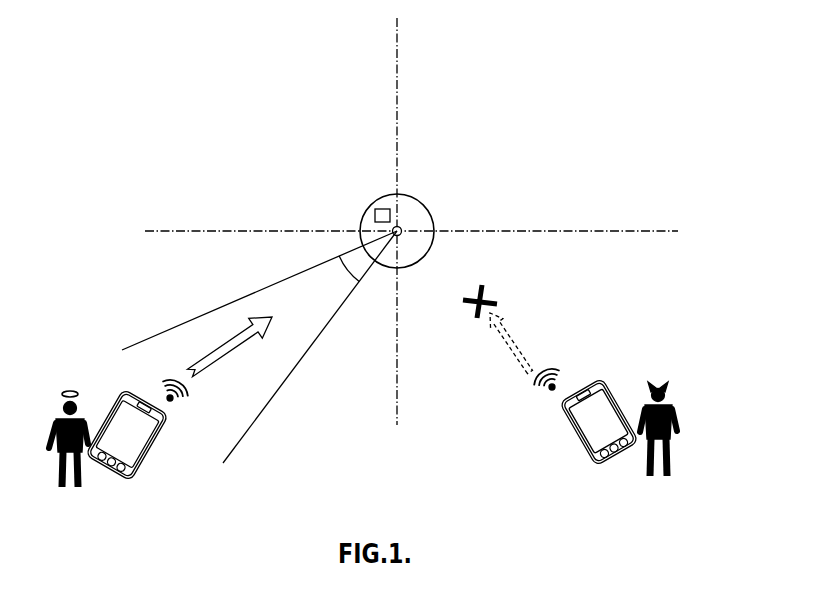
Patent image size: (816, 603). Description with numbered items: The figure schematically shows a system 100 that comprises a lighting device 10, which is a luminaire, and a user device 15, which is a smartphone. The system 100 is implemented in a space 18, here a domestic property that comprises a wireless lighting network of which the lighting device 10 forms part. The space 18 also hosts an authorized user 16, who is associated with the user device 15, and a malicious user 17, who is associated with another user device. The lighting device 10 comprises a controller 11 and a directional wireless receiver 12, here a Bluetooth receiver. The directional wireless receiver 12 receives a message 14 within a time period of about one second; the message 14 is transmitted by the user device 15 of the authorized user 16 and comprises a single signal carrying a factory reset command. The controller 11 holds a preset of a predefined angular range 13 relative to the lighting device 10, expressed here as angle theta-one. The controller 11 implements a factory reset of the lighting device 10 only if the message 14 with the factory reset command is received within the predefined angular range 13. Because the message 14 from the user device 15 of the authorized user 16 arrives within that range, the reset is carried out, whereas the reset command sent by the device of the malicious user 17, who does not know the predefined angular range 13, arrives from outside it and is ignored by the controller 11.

The system 100 is at (218, 105).
The lighting device 10 is at (379, 195).
The controller 11 is at (389, 210).
The directional wireless receiver 12 is at (403, 228).
The predefined angular range 13 is at (341, 273).
The message 14 is at (251, 338).
The user device 15 is at (163, 444).
The authorized user 16 is at (80, 411).
The malicious user 17 is at (670, 406).
The space 18 is at (495, 110).